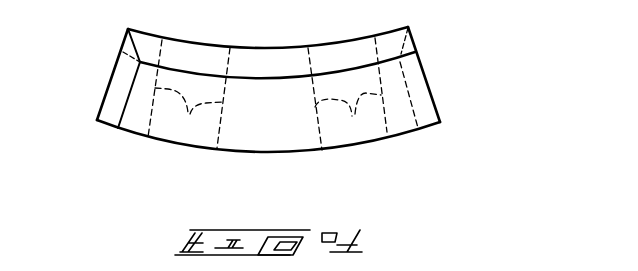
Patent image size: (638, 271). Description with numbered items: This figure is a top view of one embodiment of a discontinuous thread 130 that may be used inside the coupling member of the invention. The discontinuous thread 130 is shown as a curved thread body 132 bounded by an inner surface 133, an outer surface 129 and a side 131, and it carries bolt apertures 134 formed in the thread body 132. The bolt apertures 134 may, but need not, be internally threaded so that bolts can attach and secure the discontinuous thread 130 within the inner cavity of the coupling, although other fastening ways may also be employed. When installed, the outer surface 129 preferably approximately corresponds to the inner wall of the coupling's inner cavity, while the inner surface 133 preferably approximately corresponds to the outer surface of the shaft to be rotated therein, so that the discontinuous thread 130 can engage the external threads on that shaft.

The outer surface 129 is at (265, 153).
The discontinuous thread 130 is at (308, 128).
The side 131 is at (108, 82).
The thread body 132 is at (293, 118).
The inner surface 133 is at (267, 47).
The bolt apertures 134 is at (189, 110).